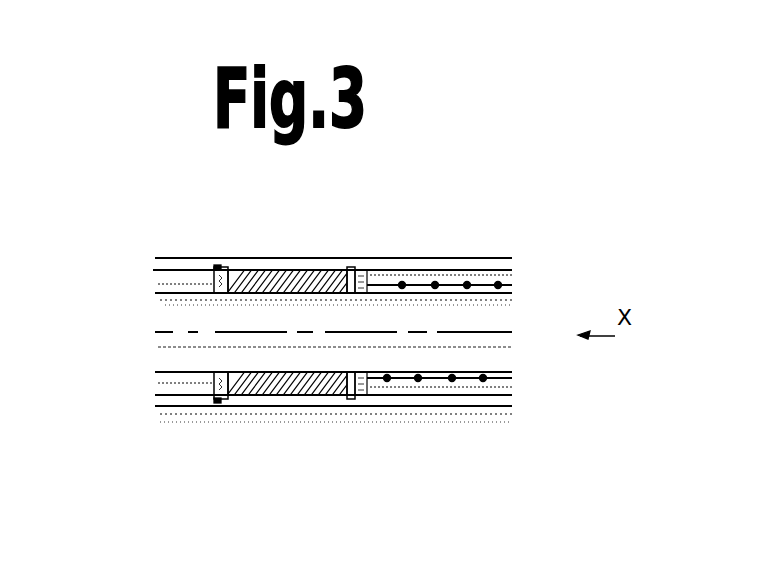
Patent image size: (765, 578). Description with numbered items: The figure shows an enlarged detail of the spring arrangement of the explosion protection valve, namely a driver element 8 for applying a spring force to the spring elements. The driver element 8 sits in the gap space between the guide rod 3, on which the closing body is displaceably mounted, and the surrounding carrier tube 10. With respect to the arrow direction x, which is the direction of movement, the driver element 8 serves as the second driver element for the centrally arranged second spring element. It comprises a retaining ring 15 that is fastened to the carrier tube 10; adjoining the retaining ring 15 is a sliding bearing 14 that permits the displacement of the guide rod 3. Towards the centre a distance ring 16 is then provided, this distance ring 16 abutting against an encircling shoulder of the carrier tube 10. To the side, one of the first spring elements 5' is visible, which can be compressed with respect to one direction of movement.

The guide rod 3 is at (157, 313).
The first spring element 5' is at (504, 309).
The driver element 8 is at (252, 256).
The carrier tube 10 is at (170, 261).
The sliding bearing 14 is at (286, 268).
The retaining ring 15 is at (352, 400).
The distance ring 16 is at (221, 403).